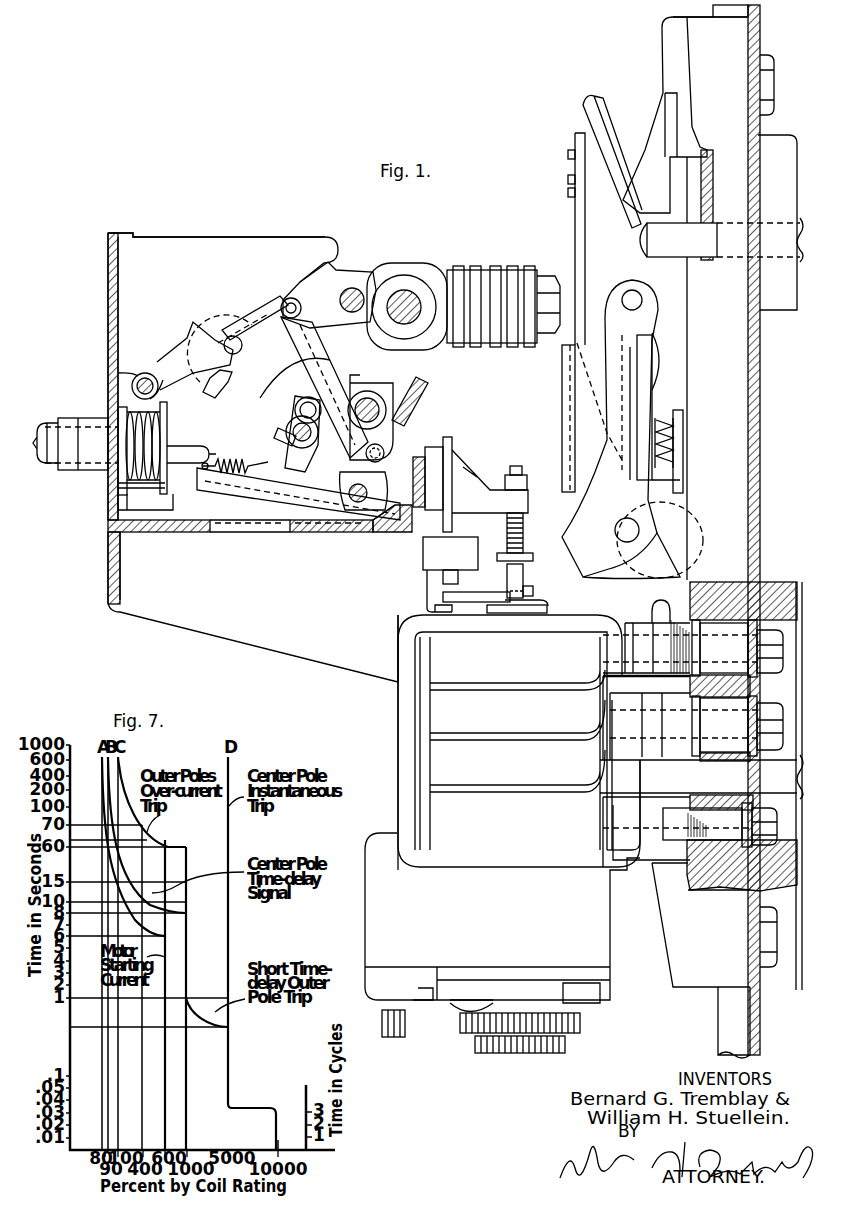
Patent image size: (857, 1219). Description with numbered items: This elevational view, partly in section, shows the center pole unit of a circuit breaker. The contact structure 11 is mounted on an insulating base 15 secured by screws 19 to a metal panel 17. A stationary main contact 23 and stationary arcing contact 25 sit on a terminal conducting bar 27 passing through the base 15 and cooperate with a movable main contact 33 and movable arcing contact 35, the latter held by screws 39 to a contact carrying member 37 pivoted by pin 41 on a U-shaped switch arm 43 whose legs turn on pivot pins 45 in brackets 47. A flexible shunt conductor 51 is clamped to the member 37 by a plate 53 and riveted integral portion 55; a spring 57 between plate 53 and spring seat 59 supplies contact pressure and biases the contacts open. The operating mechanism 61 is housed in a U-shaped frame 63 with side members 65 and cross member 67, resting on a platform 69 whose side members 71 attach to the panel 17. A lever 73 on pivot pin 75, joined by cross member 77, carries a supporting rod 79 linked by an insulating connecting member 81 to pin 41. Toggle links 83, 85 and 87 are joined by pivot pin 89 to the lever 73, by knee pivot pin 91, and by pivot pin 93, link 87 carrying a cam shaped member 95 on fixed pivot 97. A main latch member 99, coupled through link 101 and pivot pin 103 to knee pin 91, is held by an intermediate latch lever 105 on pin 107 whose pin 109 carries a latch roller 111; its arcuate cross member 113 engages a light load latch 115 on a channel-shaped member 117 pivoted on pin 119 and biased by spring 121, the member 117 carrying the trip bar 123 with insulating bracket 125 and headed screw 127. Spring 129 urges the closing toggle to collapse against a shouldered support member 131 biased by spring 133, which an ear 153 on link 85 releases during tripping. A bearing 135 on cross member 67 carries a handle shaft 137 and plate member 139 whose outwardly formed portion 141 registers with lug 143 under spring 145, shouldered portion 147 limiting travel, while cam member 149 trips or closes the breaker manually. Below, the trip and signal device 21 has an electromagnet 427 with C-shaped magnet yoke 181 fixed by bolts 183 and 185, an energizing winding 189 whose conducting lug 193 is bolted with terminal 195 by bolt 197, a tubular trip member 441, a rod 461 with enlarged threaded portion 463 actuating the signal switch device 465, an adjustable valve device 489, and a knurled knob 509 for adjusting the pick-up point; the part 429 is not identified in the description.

The contact structure 11 is at (619, 77).
The insulating base 15 is at (737, 455).
The metal panel 17 is at (756, 396).
The screws 19 is at (772, 82).
The instantaneous trip and time-delay signal device 21 is at (379, 615).
The stationary main contact 23 is at (650, 241).
The stationary arcing contact 25 is at (656, 143).
The terminal conducting bar 27 is at (731, 258).
The movable main contact 33 is at (638, 240).
The movable arcing contact 35 is at (601, 130).
The contact carrying member 37 is at (590, 218).
The screws 39 is at (568, 182).
The pivot pin 41 is at (624, 291).
The switch arm 43 is at (568, 390).
The pivot pins 45 is at (636, 541).
The brackets 47 is at (580, 533).
The flexible shunt conductor 51 is at (615, 461).
The plate 53 is at (650, 410).
The integral portion 55 is at (660, 370).
The spring 57 is at (676, 450).
The spring seat 59 is at (683, 427).
The operating mechanism 61 is at (331, 231).
The frame 63 is at (108, 290).
The side members 65 is at (240, 248).
The cross member 67 is at (108, 328).
The platform 69 is at (192, 531).
The side members 71 is at (240, 632).
The lever 73 is at (395, 373).
The pivot pin 75 is at (367, 396).
The cross member 77 is at (425, 398).
The supporting rod 79 is at (406, 290).
The insulating connecting member 81 is at (490, 268).
The toggle link 83 is at (314, 276).
The toggle link 85 is at (262, 298).
The toggle link 87 is at (188, 338).
The pivot pin 89 is at (355, 286).
The knee pivot pin 91 is at (289, 298).
The pivot pin 93 is at (230, 337).
The cam shaped member 95 is at (207, 396).
The fixed pivot 97 is at (145, 373).
The main latch member 99 is at (385, 456).
The link 101 is at (320, 355).
The pivot pin 103 is at (368, 492).
The intermediate latch lever 105 is at (280, 436).
The pin 107 is at (312, 435).
The pin 109 is at (299, 412).
The latch roller 111 is at (305, 402).
The arcuate cross member 113 is at (282, 506).
The light load latch 115 is at (266, 531).
The channel-shaped member 117 is at (385, 531).
The pin 119 is at (331, 531).
The spring 121 is at (233, 458).
The trip bar 123 is at (432, 450).
The insulating bracket 125 is at (465, 470).
The headed screw 127 is at (517, 465).
The spring 129 is at (118, 373).
The shouldered support member 131 is at (276, 383).
The spring 133 is at (342, 490).
The bearing 135 is at (78, 450).
The handle shaft 137 is at (40, 428).
The plate member 139 is at (160, 410).
The outwardly formed portion 141 is at (118, 484).
The lug 143 is at (118, 506).
The spring 145 is at (118, 405).
The shouldered portion 147 is at (167, 432).
The cam member 149 is at (200, 447).
The ear 153 is at (226, 374).
The magnet yoke 181 is at (398, 691).
The bolt 183 is at (770, 600).
The bolt 185 is at (797, 870).
The energizing winding 189 is at (450, 762).
The conducting lug 193 is at (615, 768).
The conducting terminal 195 is at (632, 790).
The bolt 197 is at (769, 742).
The electromagnet 427 is at (380, 731).
The time delay unit 429 is at (319, 917).
The tubular trip member 441 is at (523, 582).
The rod 461 is at (477, 595).
The enlarged threaded portion 463 is at (533, 593).
The signal switch device 465 is at (430, 566).
The adjustable valve device 489 is at (447, 1072).
The knurled knob 509 is at (405, 1040).